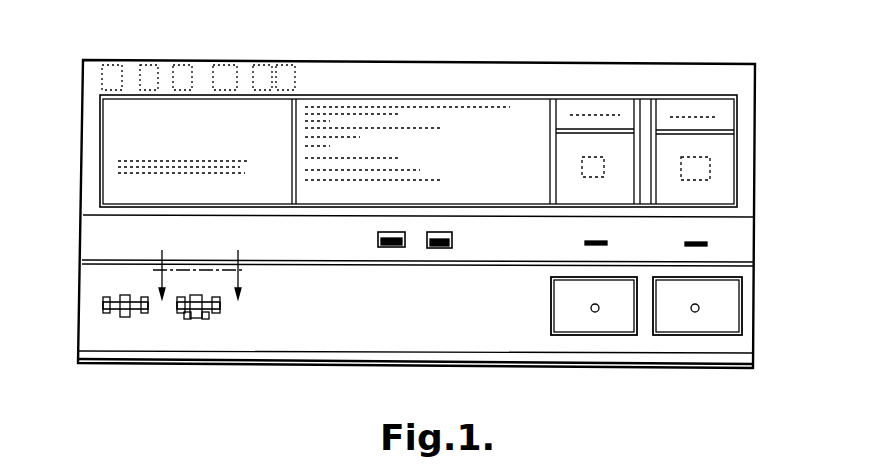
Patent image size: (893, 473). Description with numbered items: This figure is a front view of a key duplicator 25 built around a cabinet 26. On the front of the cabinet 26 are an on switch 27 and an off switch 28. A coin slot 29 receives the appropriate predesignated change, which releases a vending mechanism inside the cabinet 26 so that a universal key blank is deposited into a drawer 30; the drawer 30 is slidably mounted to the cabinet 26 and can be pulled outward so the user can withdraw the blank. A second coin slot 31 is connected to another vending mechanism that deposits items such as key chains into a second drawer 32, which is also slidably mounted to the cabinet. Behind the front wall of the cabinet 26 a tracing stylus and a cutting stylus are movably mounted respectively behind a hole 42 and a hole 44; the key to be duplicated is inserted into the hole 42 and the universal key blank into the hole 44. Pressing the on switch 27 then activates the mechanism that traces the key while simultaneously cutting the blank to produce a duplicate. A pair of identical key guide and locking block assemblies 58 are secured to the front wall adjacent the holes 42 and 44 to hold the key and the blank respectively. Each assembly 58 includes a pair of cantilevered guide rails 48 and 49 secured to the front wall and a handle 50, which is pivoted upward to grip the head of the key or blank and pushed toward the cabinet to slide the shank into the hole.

The key duplicator 25 is at (670, 38).
The cabinet 26 is at (722, 157).
The on switch 27 is at (388, 238).
The off switch 28 is at (437, 232).
The coin slot 29 is at (587, 243).
The drawer 30 is at (574, 325).
The second coin slot 31 is at (690, 243).
The drawer 32 is at (725, 302).
The hole 42 is at (120, 298).
The hole 44 is at (200, 350).
The guide rail 48 is at (181, 315).
The guide rail 49 is at (213, 318).
The handle 50 is at (184, 318).
The key guide and locking block assembly 58 is at (104, 323).